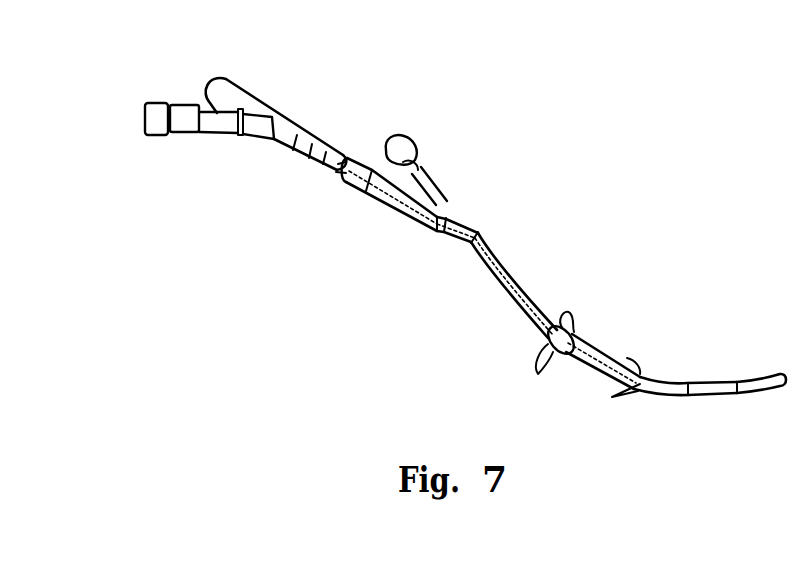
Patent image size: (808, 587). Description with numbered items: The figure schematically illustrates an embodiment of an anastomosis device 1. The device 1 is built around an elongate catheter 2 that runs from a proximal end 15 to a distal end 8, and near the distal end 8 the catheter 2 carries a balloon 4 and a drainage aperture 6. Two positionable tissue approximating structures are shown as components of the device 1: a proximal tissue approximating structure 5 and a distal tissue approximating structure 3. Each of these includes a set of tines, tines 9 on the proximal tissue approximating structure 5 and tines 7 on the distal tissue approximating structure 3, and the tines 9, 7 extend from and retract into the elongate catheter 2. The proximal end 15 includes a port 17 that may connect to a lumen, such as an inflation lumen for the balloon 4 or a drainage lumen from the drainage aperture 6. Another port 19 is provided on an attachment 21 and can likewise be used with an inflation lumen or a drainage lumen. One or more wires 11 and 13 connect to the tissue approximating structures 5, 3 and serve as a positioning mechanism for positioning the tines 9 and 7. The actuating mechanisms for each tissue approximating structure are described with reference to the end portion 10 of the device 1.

The anastomosis device 1 is at (496, 104).
The elongate catheter 2 is at (502, 252).
The distal tissue approximating structure 3 is at (635, 404).
The balloon 4 is at (700, 382).
The proximal tissue approximating structure 5 is at (529, 335).
The drainage aperture 6 is at (752, 380).
The tines 7 is at (637, 358).
The distal end 8 is at (685, 404).
The tines 9 is at (566, 327).
The end portion 10 is at (247, 86).
The wire 11 is at (340, 163).
The wire 13 is at (340, 163).
The proximal end 15 is at (402, 226).
The port 17 is at (417, 147).
The port 19 is at (133, 117).
The attachment 21 is at (257, 186).